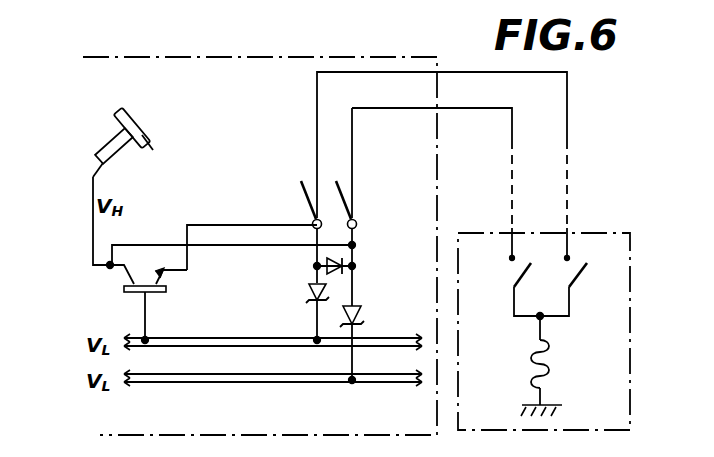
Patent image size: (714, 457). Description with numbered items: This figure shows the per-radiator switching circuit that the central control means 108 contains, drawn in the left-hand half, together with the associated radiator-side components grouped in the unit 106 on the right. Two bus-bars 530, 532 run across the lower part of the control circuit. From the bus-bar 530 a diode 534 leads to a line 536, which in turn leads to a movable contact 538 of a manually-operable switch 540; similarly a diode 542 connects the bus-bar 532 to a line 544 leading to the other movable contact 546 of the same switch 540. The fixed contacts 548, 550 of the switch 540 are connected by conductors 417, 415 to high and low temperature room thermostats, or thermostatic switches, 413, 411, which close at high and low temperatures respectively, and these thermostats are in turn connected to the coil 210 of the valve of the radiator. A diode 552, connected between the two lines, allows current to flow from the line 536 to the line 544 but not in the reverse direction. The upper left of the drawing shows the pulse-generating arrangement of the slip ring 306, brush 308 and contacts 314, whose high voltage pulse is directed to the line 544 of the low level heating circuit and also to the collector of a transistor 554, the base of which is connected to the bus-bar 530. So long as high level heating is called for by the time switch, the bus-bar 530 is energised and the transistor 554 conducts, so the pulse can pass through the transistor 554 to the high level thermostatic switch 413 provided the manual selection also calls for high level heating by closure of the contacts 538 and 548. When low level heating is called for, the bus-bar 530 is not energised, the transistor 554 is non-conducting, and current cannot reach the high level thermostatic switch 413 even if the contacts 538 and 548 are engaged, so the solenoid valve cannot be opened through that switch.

The welding head unit 106 is at (631, 347).
The central control means 108 is at (166, 57).
The coil 210 is at (549, 352).
The slip ring 306 is at (116, 120).
The brush 308 is at (140, 130).
The contacts 314 is at (112, 159).
The low temperature room thermostat 411 is at (508, 270).
The high temperature room thermostat 413 is at (567, 276).
The conductor 415 is at (468, 108).
The conductor 417 is at (548, 70).
The bus-bar 530 is at (215, 338).
The bus-bar 532 is at (222, 384).
The diode 534 is at (308, 291).
The line 536 is at (311, 256).
The movable contact 538 is at (305, 191).
The manually-operable switch 540 is at (358, 199).
The diode 542 is at (362, 311).
The line 544 is at (360, 246).
The movable contact 546 is at (360, 216).
The fixed contact 548 is at (312, 178).
The fixed contact 550 is at (352, 182).
The diode 552 is at (332, 266).
The transistor 554 is at (127, 293).